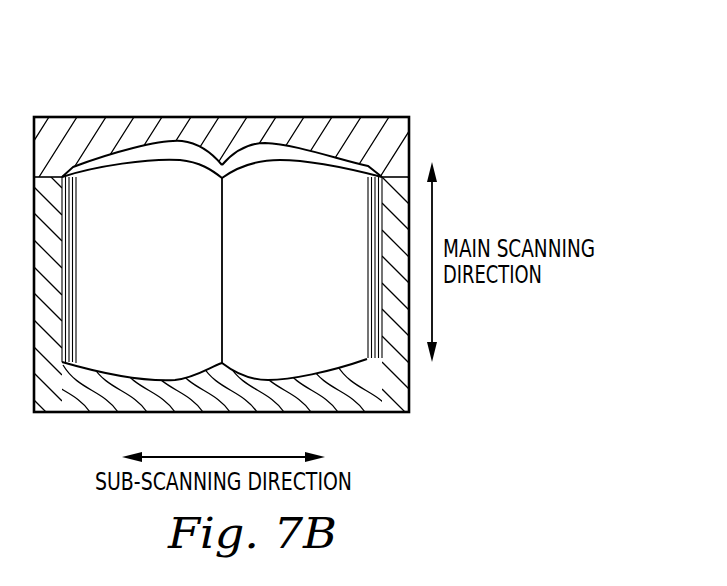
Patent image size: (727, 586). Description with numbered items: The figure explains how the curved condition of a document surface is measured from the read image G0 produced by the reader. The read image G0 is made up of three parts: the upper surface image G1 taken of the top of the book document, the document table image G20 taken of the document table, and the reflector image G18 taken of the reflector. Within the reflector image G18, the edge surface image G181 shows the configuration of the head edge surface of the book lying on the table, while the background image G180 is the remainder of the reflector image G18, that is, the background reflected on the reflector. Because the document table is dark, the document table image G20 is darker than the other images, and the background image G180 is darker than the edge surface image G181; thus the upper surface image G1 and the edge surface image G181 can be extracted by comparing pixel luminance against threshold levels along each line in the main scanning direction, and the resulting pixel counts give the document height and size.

The read image G0 is at (360, 117).
The upper surface image G1 is at (312, 280).
The reflector image G18 is at (222, 102).
The background image G180 is at (145, 123).
The edge surface image G181 is at (250, 145).
The document table image G20 is at (382, 405).